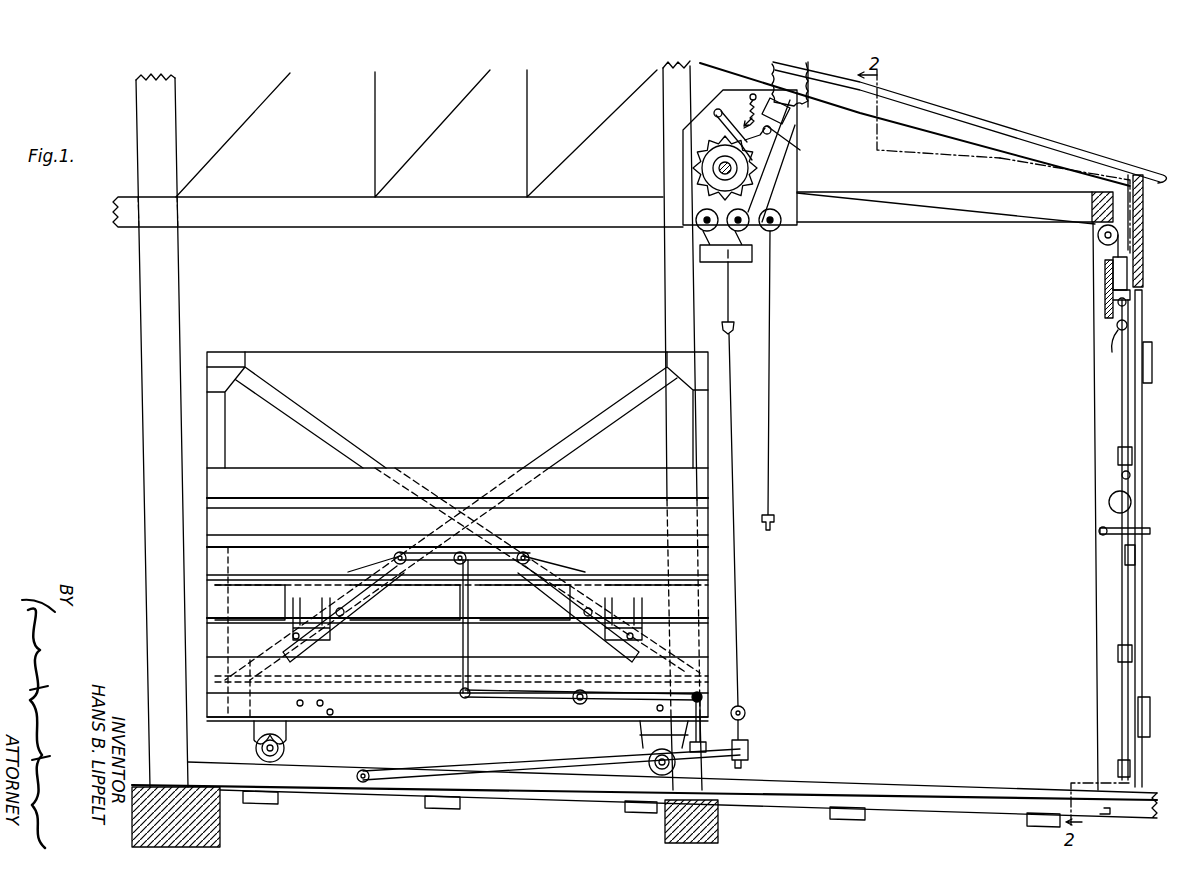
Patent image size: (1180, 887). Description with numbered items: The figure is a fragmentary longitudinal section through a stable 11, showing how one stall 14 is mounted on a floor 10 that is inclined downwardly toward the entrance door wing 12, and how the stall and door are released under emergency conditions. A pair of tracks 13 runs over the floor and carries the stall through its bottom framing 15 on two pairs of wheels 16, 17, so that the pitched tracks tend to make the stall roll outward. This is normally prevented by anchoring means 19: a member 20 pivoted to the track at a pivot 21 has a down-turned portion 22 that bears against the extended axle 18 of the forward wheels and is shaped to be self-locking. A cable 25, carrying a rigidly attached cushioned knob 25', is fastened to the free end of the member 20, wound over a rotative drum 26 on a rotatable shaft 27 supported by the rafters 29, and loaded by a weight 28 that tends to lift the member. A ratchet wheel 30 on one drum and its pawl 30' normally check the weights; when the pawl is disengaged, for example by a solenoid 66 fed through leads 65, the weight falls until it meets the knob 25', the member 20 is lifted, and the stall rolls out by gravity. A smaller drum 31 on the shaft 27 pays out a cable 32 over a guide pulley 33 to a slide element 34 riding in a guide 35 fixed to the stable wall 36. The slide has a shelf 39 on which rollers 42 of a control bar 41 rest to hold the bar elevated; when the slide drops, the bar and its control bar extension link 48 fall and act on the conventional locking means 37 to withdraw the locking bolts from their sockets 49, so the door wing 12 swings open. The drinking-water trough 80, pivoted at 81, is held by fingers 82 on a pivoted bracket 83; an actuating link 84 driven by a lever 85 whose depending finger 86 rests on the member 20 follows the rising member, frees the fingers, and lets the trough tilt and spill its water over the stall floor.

The floor 10 is at (318, 782).
The stable 11 is at (138, 380).
The door wing 12 is at (1135, 672).
The tracks 13 is at (1003, 786).
The stall 14 is at (405, 350).
The bottom framing 15 is at (345, 719).
The wheels 16 is at (254, 748).
The wheels 17 is at (648, 747).
The axle 18 is at (648, 762).
The anchoring means 19 is at (747, 756).
The pivoted member 20 is at (520, 768).
The pivot 21 is at (363, 782).
The down-turned portion 22 is at (665, 770).
The cable 25 is at (751, 520).
The cushioned knob 25' is at (761, 298).
The rotative drum 26 is at (738, 176).
The rotatable shaft 27 is at (740, 165).
The weight 28 is at (752, 262).
The rafters 29 is at (838, 222).
The ratchet wheel 30 is at (684, 140).
The pawl 30' is at (693, 138).
The smaller drum 31 is at (718, 170).
The cable 32 is at (992, 186).
The guide pulley 33 is at (1097, 237).
The slide element 34 is at (1110, 298).
The guide 35 is at (1110, 275).
The stable wall 36 is at (1128, 240).
The locking means 37 is at (1120, 701).
The shelf 39 is at (1115, 318).
The control bar 41 is at (1112, 340).
The rollers 42 is at (1118, 312).
The control bar extension link 48 is at (1125, 410).
The sockets 49 is at (1108, 815).
The leads 65 is at (798, 104).
The solenoid 66 is at (786, 124).
The drinking-water trough 80 is at (605, 598).
The pivot 81 is at (461, 614).
The fingers 82 is at (345, 575).
The pivoted bracket 83 is at (437, 566).
The actuating link 84 is at (470, 645).
The lever 85 is at (505, 700).
The depending finger 86 is at (702, 733).